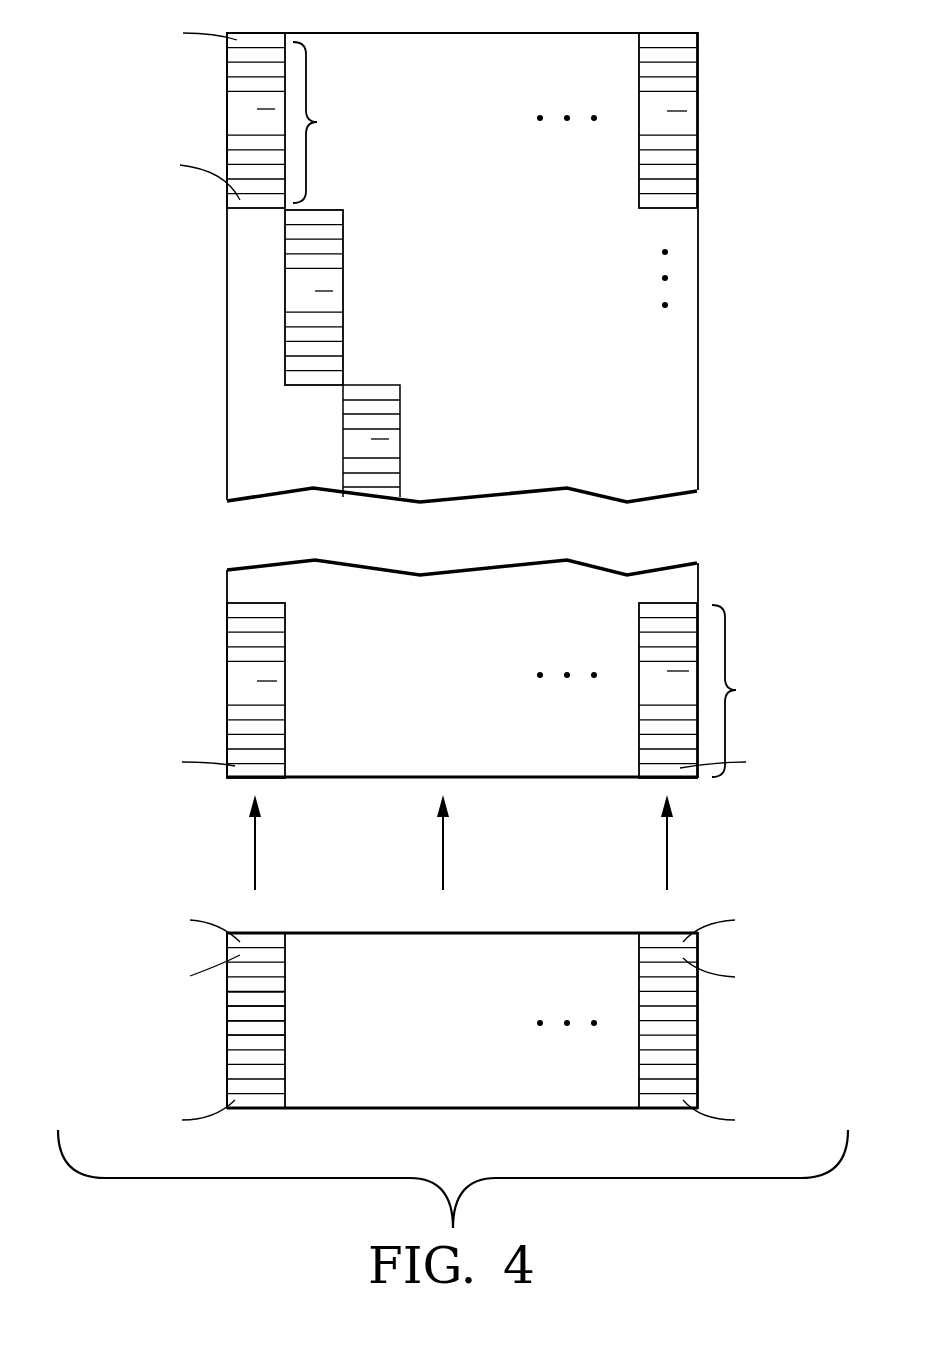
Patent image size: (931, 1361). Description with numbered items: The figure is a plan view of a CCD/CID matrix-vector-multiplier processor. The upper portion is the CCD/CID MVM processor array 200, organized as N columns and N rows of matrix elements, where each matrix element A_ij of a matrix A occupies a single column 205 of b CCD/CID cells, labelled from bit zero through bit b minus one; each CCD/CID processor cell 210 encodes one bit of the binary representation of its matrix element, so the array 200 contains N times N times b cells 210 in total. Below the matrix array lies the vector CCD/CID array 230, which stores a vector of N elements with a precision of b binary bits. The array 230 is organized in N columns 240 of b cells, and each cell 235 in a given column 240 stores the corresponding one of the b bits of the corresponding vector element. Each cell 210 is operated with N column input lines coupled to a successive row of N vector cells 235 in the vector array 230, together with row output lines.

The CCD/CID MVM processor array 200 is at (730, 262).
The column 205 is at (412, 405).
The CCD/CID processor cell 210 is at (675, 68).
The vector CCD/CID array 230 is at (212, 1000).
The vector CCD/CID cell 235 is at (272, 1030).
The column 240 is at (462, 982).